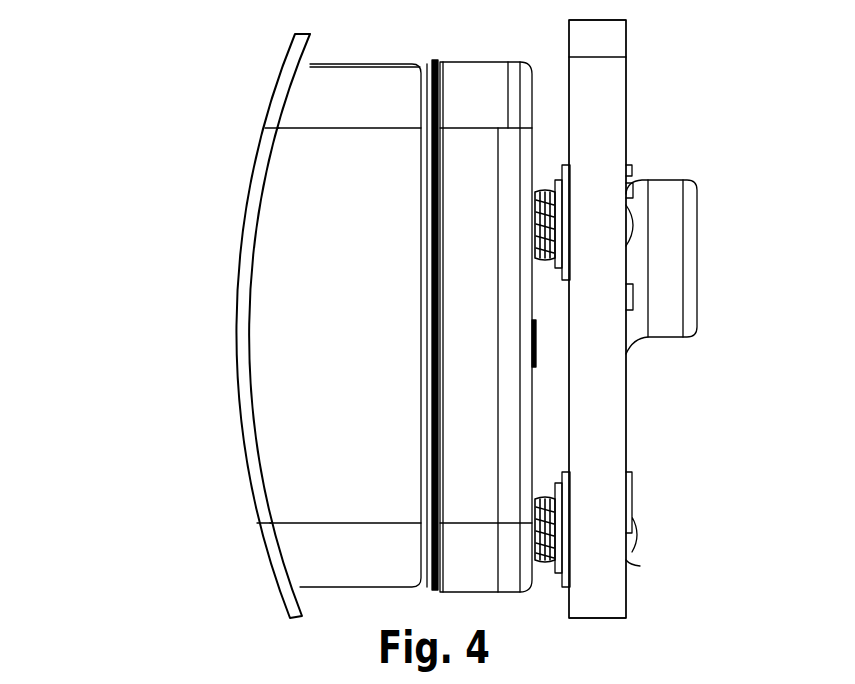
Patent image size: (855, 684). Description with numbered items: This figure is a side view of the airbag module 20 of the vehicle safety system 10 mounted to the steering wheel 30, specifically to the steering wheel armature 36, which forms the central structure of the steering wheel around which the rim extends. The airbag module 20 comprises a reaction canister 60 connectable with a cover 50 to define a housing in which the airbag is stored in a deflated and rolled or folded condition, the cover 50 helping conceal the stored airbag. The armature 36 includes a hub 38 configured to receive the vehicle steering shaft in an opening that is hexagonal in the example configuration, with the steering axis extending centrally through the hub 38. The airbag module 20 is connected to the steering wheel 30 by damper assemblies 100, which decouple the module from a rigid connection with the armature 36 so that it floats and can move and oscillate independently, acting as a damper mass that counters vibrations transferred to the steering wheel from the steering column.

The vehicle safety system 10 is at (158, 172).
The airbag module 20 is at (204, 262).
The steering wheel 30 is at (600, 92).
The steering wheel armature 36 is at (597, 319).
The hub 38 is at (665, 256).
The cover 50 is at (302, 375).
The reaction canister 60 is at (487, 90).
The damper assemblies 100 is at (548, 283).